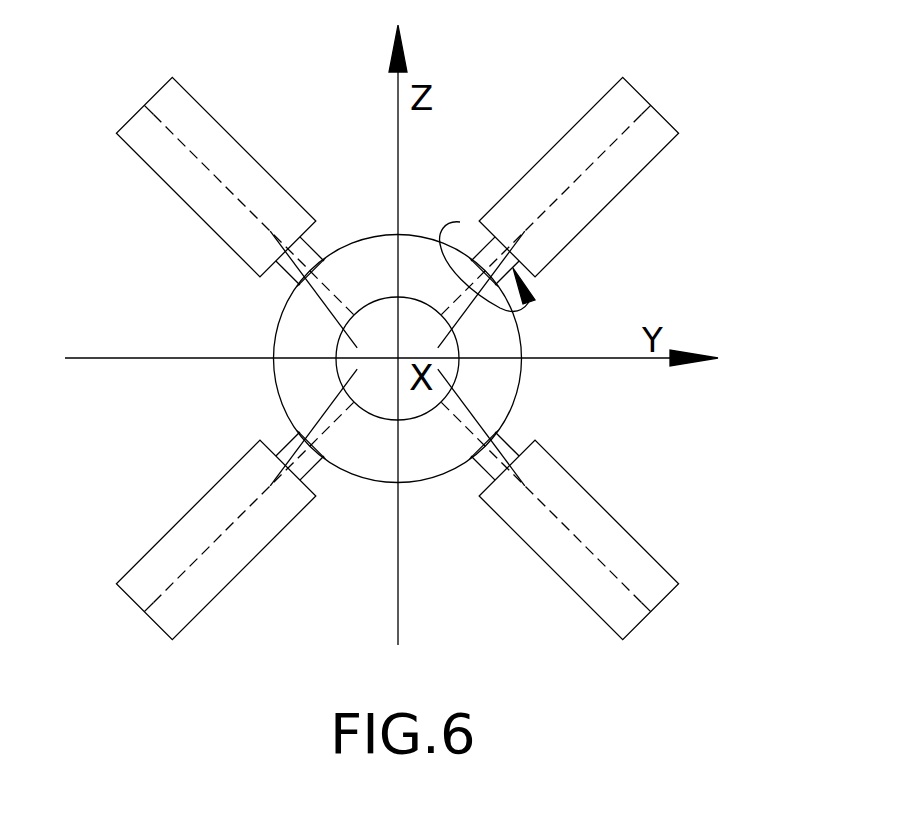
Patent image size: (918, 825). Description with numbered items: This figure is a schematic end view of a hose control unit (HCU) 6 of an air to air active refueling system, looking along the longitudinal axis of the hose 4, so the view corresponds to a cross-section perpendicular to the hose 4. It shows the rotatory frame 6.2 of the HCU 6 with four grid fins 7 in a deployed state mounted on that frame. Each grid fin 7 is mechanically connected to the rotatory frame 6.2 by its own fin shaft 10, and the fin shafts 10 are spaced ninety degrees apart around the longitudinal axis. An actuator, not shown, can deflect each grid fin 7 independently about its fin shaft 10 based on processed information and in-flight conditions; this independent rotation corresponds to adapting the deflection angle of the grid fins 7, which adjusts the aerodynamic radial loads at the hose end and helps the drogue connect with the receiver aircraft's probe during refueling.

The hose 4 is at (298, 303).
The hose control unit (HCU) 6 is at (708, 246).
The rotatory frame 6.2 is at (507, 383).
The grid fin 7 is at (136, 125).
The fin shaft 10 is at (308, 254).